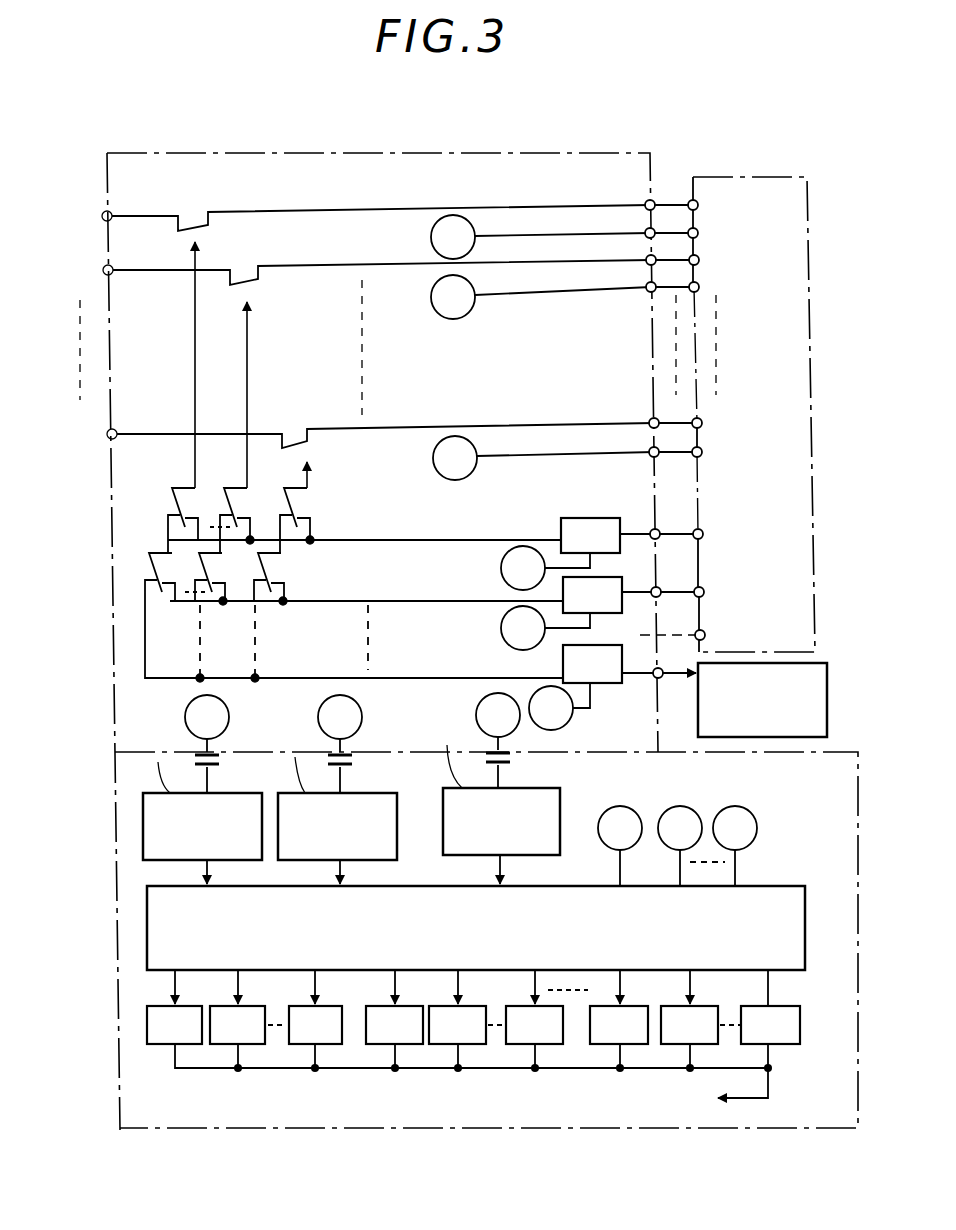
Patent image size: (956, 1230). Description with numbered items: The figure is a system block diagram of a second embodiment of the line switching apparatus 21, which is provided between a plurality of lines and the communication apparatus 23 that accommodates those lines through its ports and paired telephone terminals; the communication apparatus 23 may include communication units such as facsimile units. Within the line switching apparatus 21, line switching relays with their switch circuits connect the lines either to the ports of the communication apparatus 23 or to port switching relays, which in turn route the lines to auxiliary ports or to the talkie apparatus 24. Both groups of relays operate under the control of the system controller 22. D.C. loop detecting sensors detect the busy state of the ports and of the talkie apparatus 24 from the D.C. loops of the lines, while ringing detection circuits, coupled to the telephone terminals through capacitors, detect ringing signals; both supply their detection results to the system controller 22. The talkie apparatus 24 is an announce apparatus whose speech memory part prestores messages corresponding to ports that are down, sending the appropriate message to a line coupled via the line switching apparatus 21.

The line switching apparatus 21 is at (545, 150).
The system controller 22 is at (805, 895).
The communication apparatus 23 is at (812, 300).
The talkie apparatus 24 is at (827, 702).